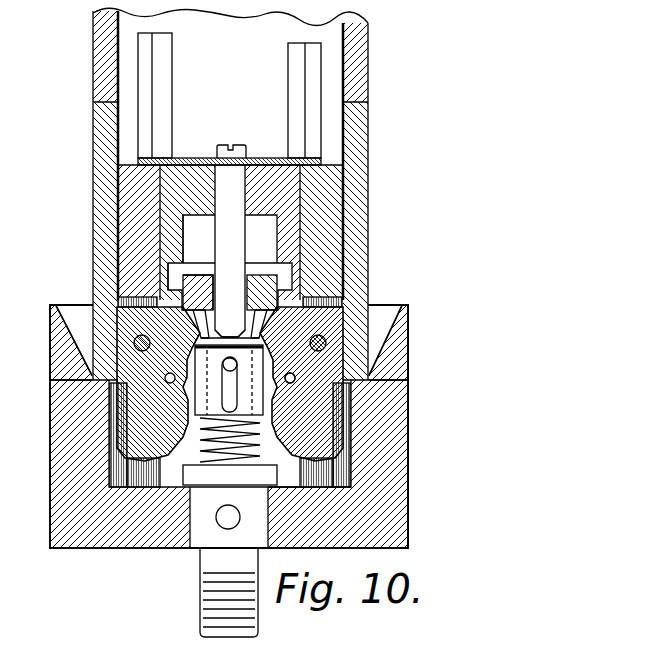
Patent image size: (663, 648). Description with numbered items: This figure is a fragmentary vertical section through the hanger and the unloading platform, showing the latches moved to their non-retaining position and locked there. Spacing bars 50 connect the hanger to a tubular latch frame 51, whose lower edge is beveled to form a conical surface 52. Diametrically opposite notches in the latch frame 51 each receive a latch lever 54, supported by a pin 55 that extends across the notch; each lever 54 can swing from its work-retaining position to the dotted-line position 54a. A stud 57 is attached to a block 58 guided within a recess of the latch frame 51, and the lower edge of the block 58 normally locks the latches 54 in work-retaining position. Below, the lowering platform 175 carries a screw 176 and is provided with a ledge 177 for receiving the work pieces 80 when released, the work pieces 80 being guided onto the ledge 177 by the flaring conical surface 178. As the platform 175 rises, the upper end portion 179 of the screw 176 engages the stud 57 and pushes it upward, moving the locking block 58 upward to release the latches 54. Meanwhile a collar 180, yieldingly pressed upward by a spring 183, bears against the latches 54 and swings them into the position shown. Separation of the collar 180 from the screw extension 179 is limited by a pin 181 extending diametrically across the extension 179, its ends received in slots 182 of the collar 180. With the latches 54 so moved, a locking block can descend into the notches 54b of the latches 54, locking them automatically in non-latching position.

The spacing bars 50 is at (292, 79).
The latch frame 51 is at (335, 228).
The conical surface 52 is at (328, 472).
The latch lever 54 is at (260, 275).
The dotted-line position of latch lever 54a is at (163, 283).
The notches of the latches 54b is at (198, 275).
The pin 55 is at (137, 349).
The stud 57 is at (215, 157).
The block 58 is at (276, 157).
The work pieces 80 is at (362, 195).
The lowering platform 175 is at (50, 447).
The screw 176 is at (208, 563).
The ledge 177 is at (88, 385).
The flaring conical surface 178 is at (60, 336).
The upper end portion of the screw 179 is at (228, 335).
The collar 180 is at (197, 410).
The pin 181 is at (330, 310).
The slots 182 is at (273, 400).
The spring 183 is at (220, 465).